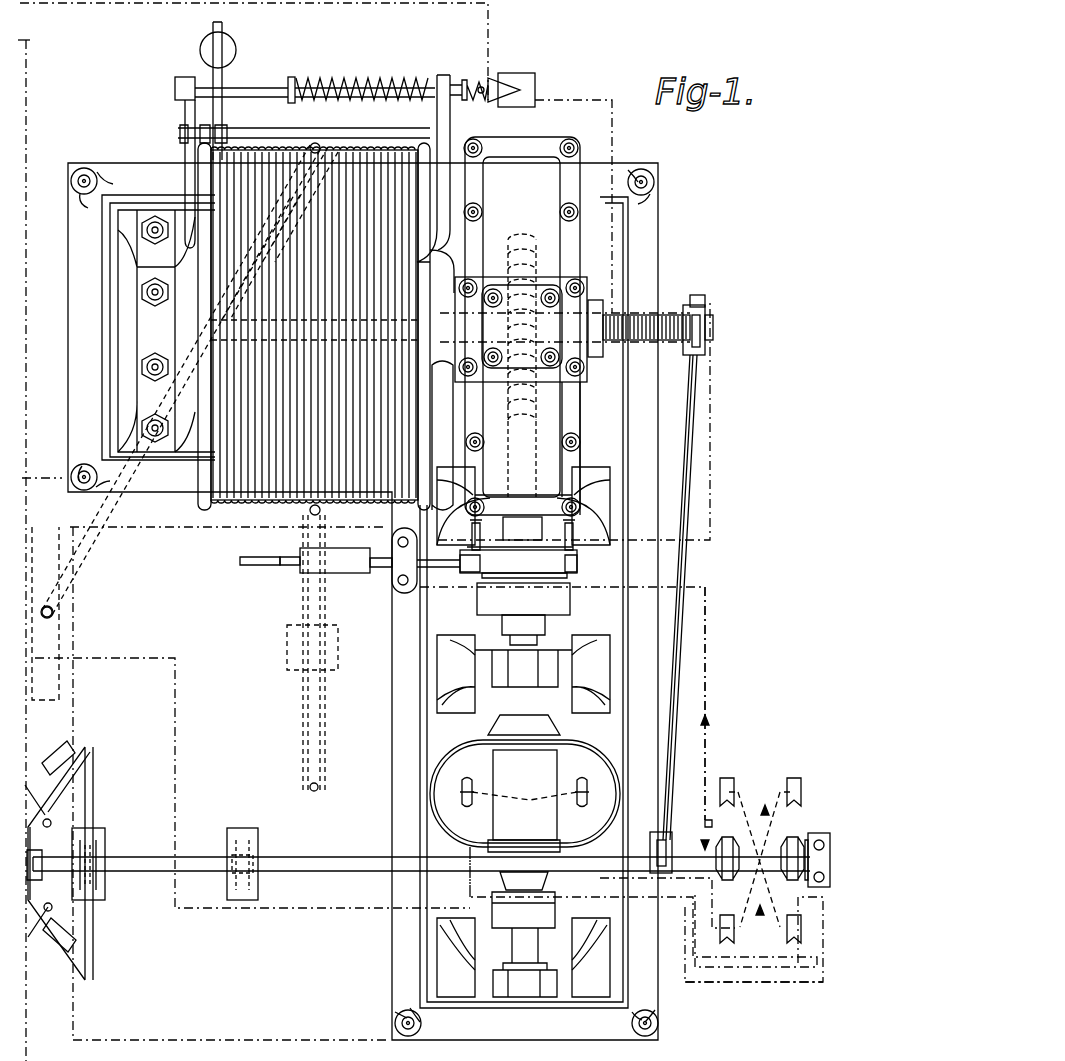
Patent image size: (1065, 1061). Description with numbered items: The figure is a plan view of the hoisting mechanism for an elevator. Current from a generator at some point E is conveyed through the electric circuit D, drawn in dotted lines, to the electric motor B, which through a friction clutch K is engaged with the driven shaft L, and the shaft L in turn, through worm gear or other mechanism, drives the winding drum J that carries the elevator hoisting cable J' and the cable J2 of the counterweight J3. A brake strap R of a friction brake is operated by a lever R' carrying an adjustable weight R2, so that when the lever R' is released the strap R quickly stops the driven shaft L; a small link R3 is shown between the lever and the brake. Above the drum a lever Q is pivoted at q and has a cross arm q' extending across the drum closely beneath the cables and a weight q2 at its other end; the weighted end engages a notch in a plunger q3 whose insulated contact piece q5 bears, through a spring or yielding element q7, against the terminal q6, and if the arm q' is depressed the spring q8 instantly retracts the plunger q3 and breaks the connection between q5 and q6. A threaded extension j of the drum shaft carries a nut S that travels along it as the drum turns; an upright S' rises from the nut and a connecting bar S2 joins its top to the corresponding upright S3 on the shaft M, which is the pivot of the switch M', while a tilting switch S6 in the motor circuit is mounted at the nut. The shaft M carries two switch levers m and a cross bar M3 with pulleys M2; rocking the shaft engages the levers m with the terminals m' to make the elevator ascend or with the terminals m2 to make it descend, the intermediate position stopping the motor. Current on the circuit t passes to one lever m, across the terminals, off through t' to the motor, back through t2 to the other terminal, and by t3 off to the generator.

The generator point E is at (22, 536).
The electric circuit D is at (421, 521).
The cross arm q' is at (314, 326).
The winding drum J is at (242, 380).
The elevator hoisting cable J' is at (319, 644).
The counterweight cable J2 is at (45, 628).
The counterweight J3 is at (45, 613).
The weight q2 is at (236, 52).
The lever Q is at (220, 116).
The pivot q is at (241, 107).
The plunger q3 is at (290, 72).
The spring q8 is at (388, 102).
The spring or yielding element q7 is at (458, 98).
The insulated contact piece q5 is at (496, 78).
The terminal q6 is at (507, 106).
The threaded shaft extension j is at (668, 318).
The nut S is at (716, 330).
The tilting switch S6 is at (702, 296).
The upright S' is at (728, 334).
The connecting bar S2 is at (684, 556).
The upright S3 is at (672, 846).
The driven shaft L is at (522, 533).
The brake strap R is at (518, 562).
The friction clutch K is at (523, 614).
The link R3 is at (426, 560).
The adjustable weight R2 is at (336, 576).
The brake lever R' is at (310, 581).
The electric motor B is at (525, 783).
The circuit t2 is at (598, 870).
The shaft M is at (421, 864).
The cross bar M3 is at (66, 864).
The pulleys M2 is at (94, 750).
The switch levers m is at (760, 849).
The terminals m' is at (761, 842).
The terminals m2 is at (763, 938).
The switch M' is at (817, 846).
The circuit t is at (709, 703).
The circuit t' is at (780, 935).
The circuit t3 is at (754, 978).